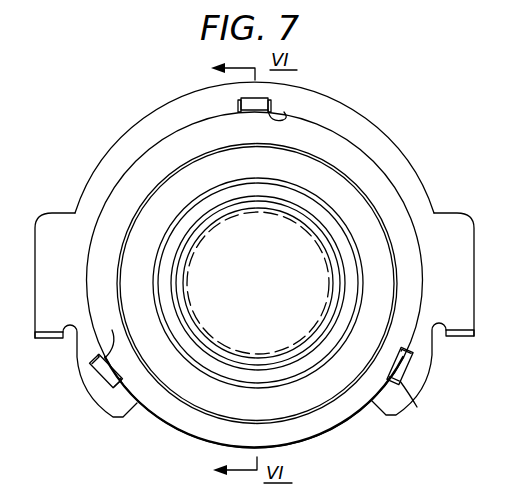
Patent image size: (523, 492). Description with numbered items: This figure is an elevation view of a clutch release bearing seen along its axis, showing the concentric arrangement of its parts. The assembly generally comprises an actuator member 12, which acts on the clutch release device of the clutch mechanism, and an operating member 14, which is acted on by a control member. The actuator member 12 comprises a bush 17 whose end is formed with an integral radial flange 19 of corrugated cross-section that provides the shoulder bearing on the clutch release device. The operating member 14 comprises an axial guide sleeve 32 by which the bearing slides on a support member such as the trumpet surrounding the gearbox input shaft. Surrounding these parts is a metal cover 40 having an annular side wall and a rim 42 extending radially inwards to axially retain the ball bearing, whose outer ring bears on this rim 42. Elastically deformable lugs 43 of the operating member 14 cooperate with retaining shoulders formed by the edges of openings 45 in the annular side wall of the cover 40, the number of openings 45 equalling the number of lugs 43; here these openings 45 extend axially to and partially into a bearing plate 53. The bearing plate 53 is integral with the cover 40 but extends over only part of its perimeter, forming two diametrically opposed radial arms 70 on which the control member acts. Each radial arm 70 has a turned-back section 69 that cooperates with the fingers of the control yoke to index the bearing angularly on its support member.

The actuator member 12 is at (234, 395).
The operating member 14 is at (314, 346).
The bush 17 is at (217, 368).
The radial flange 19 is at (268, 173).
The axial guide sleeve 32 is at (285, 364).
The cover 40 is at (152, 408).
The rim 42 is at (272, 453).
The elastically deformable lugs 43 is at (274, 98).
The openings 45 is at (288, 117).
The bearing plate 53 is at (419, 168).
The turned-back section 69 is at (50, 336).
The radial arms 70 is at (45, 223).